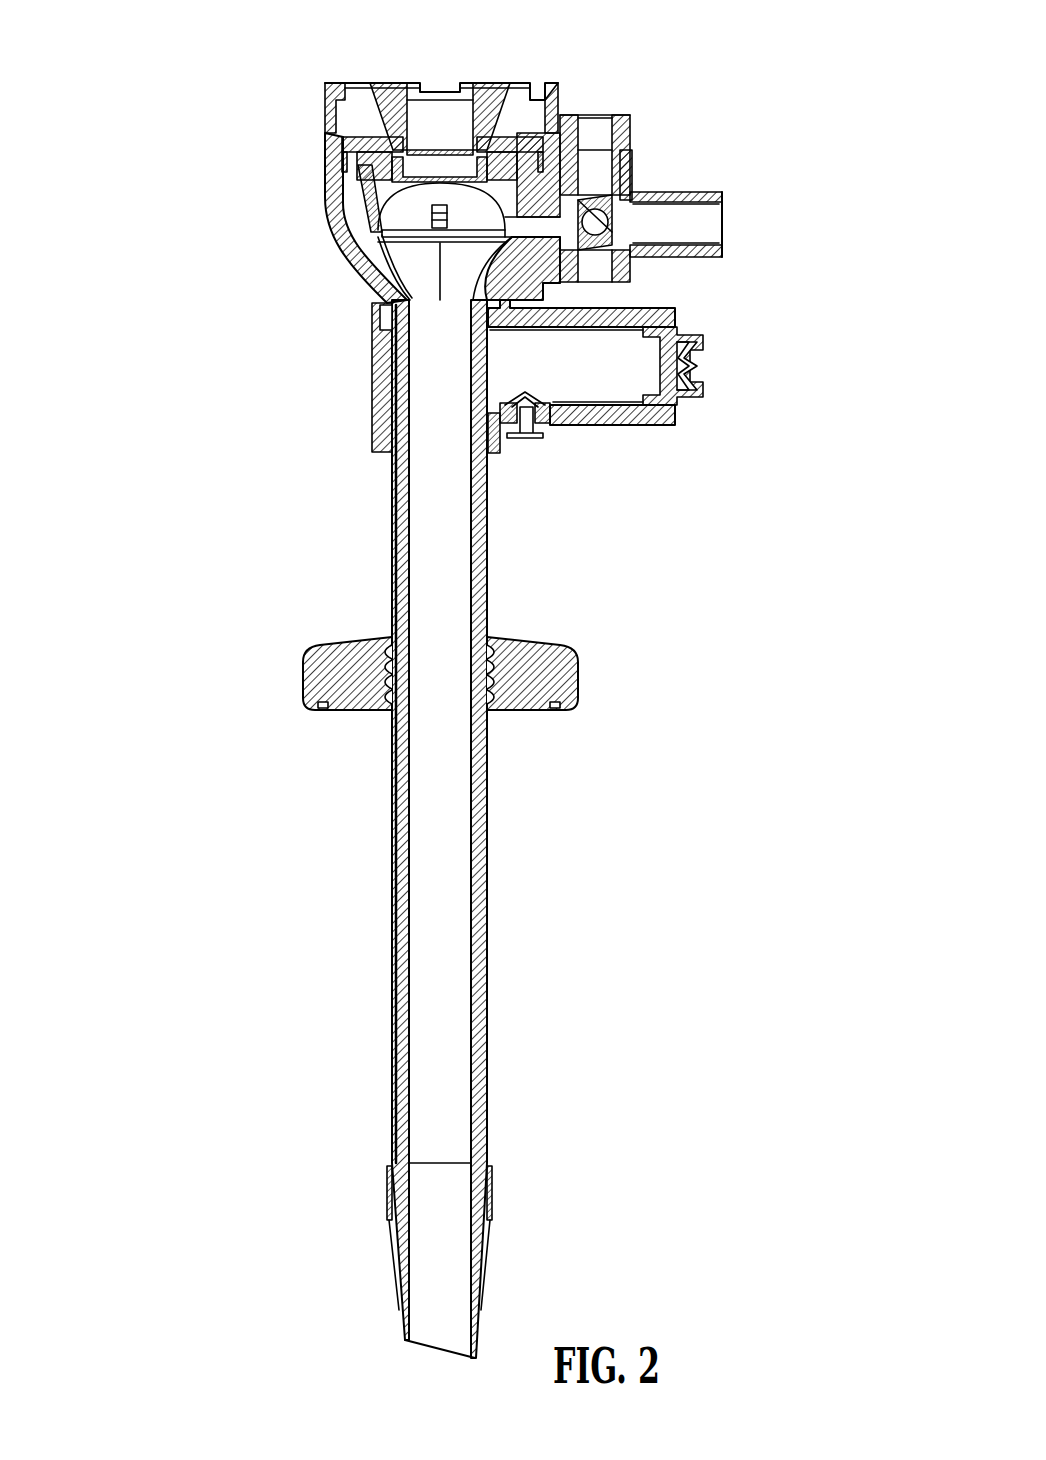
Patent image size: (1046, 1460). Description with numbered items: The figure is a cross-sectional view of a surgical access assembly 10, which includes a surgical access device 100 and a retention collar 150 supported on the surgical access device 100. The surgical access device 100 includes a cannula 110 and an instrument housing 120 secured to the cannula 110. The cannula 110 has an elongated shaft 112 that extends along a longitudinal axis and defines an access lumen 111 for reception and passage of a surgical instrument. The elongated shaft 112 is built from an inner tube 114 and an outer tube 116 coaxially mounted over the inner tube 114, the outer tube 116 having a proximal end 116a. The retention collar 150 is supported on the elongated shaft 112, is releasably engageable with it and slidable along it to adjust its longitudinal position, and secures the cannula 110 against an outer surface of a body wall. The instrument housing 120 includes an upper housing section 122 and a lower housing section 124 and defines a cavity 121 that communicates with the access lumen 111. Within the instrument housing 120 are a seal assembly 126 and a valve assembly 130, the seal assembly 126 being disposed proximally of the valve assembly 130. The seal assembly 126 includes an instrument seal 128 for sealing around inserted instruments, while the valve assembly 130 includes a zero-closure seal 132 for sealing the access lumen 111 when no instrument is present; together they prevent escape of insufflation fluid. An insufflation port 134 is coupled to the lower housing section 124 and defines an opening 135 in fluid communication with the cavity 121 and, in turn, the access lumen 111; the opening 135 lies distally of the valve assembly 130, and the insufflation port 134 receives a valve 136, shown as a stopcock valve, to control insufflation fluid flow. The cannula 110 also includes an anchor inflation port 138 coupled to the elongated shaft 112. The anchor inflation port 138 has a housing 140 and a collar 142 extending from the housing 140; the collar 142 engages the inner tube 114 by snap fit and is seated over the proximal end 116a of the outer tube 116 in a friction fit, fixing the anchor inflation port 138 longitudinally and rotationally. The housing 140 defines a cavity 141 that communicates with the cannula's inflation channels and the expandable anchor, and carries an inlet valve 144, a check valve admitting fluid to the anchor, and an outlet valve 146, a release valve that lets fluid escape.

The surgical access assembly 10 is at (708, 69).
The surgical access device 100 is at (205, 337).
The cannula 110 is at (534, 610).
The access lumen 111 is at (407, 546).
The elongated shaft 112 is at (332, 573).
The inner tube 114 is at (400, 913).
The outer tube 116 is at (393, 992).
The proximal end of the outer tube 116a is at (492, 437).
The instrument housing 120 is at (288, 89).
The cavity 121 is at (400, 261).
The upper housing section 122 is at (326, 80).
The lower housing section 124 is at (328, 212).
The seal assembly 126 is at (297, 141).
The instrument seal 128 is at (444, 170).
The valve assembly 130 is at (303, 188).
The zero-closure seal 132 is at (364, 220).
The insufflation port 134 is at (690, 188).
The opening 135 is at (700, 232).
The valve 136 is at (630, 116).
The anchor inflation port 138 is at (580, 425).
The housing 140 is at (632, 424).
The cavity 141 is at (622, 345).
The collar 142 is at (383, 393).
The inlet valve 144 is at (698, 398).
The outlet valve 146 is at (530, 437).
The retention collar 150 is at (303, 660).